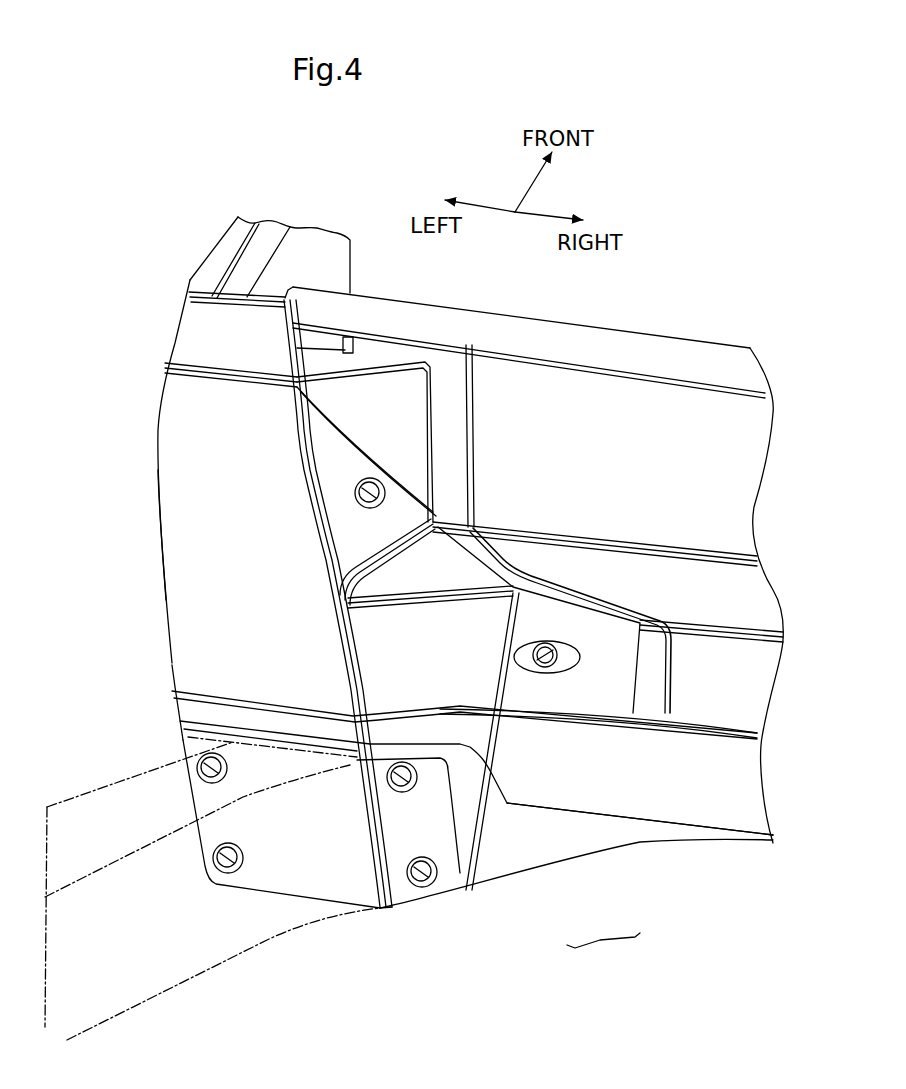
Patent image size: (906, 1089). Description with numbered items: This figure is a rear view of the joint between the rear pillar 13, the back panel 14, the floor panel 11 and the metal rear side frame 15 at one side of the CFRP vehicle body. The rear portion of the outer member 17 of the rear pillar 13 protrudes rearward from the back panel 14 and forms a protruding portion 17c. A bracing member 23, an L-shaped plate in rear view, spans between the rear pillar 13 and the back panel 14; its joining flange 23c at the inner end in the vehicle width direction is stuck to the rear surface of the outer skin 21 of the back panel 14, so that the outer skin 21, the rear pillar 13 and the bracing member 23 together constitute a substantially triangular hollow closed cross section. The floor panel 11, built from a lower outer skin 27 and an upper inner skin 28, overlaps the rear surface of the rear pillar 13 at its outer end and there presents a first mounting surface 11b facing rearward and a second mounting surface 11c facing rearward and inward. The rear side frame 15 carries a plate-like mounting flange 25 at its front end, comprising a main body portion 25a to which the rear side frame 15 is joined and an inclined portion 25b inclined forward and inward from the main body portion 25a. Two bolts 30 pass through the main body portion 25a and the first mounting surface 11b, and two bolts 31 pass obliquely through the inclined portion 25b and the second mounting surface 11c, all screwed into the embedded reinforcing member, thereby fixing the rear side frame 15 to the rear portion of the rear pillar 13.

The floor panel 11 is at (603, 953).
The first mounting surface 11b is at (283, 872).
The second mounting surface 11c is at (477, 887).
The rear pillar 13 is at (137, 455).
The back panel 14 is at (636, 324).
The rear side frame 15 is at (115, 777).
The outer member 17 is at (167, 582).
The protruding portion 17c is at (177, 538).
The outer skin 21 is at (687, 402).
The bracing member 23 is at (474, 480).
The joining flange 23c is at (453, 415).
The mounting flange 25 is at (207, 720).
The main body portion 25a is at (284, 740).
The inclined portion 25b is at (413, 740).
The lower outer skin 27 is at (533, 870).
The upper inner skin 28 is at (658, 800).
The bolts 30 is at (212, 778).
The bolts 31 is at (402, 790).